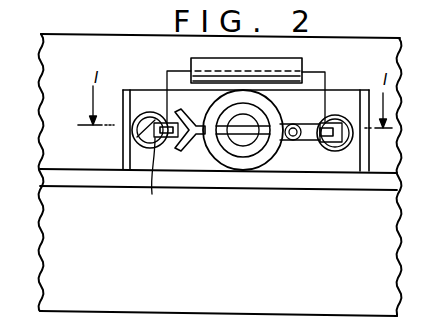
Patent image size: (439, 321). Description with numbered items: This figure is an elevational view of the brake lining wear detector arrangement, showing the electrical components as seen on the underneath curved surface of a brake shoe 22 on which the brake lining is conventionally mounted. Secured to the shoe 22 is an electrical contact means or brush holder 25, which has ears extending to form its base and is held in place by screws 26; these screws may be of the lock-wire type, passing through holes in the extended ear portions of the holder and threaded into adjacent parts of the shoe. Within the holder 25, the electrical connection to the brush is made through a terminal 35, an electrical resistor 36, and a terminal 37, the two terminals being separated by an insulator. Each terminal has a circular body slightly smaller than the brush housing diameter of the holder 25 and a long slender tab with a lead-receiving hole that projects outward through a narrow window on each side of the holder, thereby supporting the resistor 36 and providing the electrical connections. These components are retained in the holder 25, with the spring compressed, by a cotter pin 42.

The brake shoe 22 is at (140, 253).
The brush holder 25 is at (250, 165).
The screws 26 is at (148, 113).
The terminal 35 is at (141, 174).
The electrical resistor 36 is at (290, 65).
The terminal 37 is at (308, 140).
The cotter pin 42 is at (194, 143).